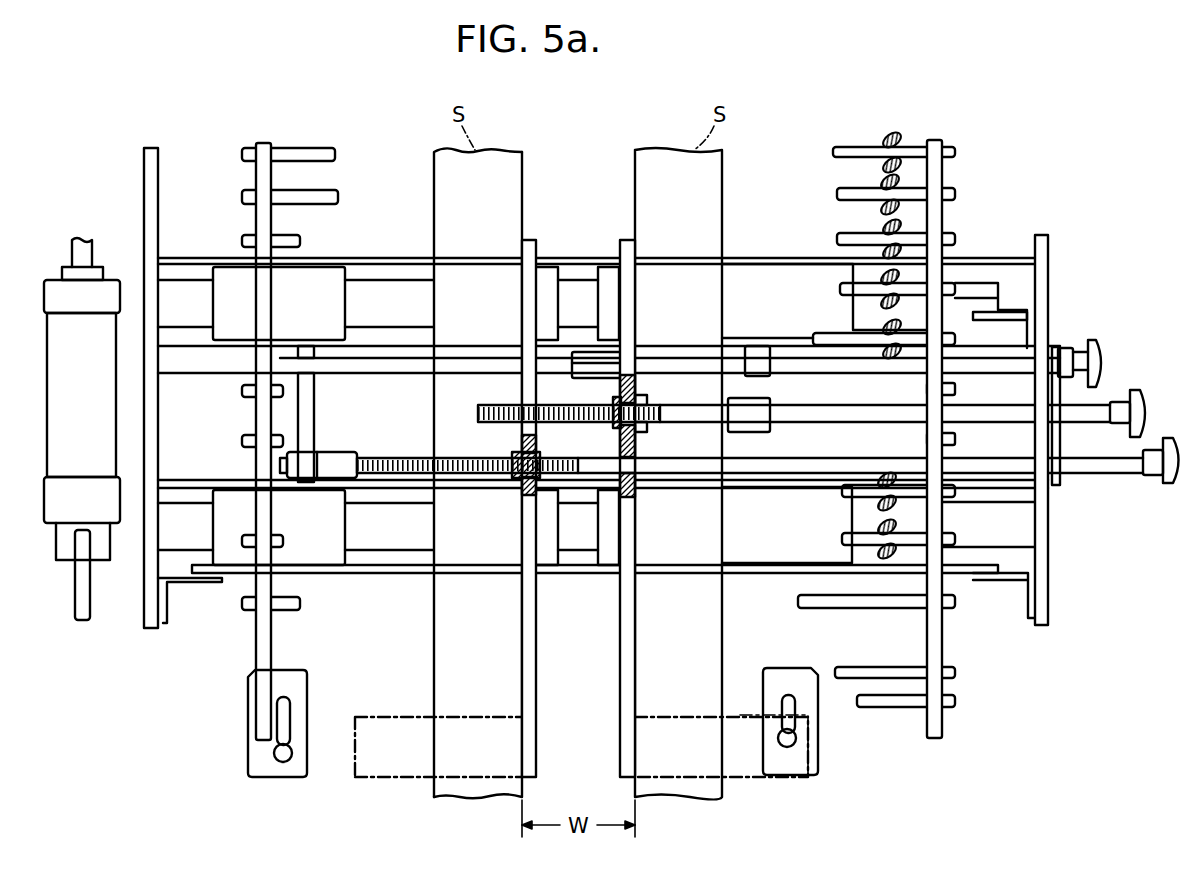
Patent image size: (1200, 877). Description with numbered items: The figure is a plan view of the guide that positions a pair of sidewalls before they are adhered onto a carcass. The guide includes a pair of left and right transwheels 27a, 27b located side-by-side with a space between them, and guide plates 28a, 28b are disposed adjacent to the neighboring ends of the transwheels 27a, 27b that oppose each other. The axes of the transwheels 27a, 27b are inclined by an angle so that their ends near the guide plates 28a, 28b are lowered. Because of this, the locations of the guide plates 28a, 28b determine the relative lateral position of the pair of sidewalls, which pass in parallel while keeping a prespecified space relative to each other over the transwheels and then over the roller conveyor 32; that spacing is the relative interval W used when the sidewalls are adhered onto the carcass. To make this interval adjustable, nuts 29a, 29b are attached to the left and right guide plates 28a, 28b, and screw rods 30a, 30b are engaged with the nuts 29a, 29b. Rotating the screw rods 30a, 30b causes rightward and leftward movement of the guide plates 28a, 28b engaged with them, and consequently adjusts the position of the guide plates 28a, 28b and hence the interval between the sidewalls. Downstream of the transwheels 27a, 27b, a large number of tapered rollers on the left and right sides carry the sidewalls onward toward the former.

The left transwheel 27a is at (378, 778).
The right transwheel 27b is at (738, 778).
The left guide plate 28a is at (523, 643).
The right guide plate 28b is at (635, 633).
The nut 29a is at (513, 452).
The nut 29b is at (640, 398).
The screw rod 30a is at (1095, 478).
The screw rod 30b is at (1098, 407).
The roller conveyor 32 is at (884, 185).